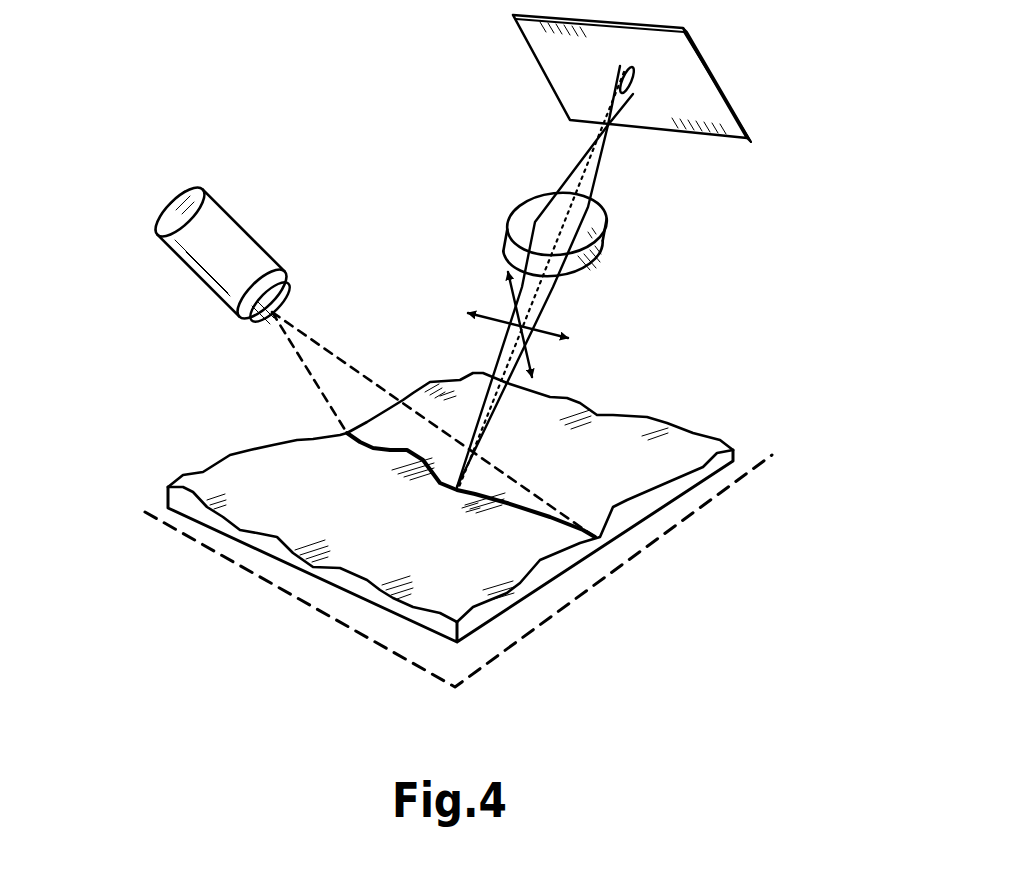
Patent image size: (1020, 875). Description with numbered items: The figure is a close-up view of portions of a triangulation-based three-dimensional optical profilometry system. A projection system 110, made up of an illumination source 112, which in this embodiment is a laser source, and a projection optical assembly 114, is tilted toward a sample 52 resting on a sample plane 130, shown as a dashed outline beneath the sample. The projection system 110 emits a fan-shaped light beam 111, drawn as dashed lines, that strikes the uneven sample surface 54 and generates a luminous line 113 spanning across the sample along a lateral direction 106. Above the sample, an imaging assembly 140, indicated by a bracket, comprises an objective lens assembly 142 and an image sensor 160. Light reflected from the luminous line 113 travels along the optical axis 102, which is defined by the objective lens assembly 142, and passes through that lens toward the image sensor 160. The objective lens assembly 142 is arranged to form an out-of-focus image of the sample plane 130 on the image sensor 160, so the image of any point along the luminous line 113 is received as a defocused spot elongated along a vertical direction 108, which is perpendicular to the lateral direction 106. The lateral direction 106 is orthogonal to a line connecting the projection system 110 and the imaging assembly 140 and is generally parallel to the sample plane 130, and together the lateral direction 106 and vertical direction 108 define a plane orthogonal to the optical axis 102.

The image sensor 160 is at (570, 68).
The optical axis 102 is at (580, 182).
The objective lens assembly 142 is at (610, 252).
The imaging assembly 140 is at (738, 15).
The illumination source 112 is at (230, 243).
The projection optical assembly 114 is at (280, 282).
The projection system 110 is at (183, 302).
The fan-shaped light beam 111 is at (270, 358).
The vertical direction 108 is at (517, 300).
The lateral direction 106 is at (507, 320).
The sample surface 54 is at (668, 450).
The sample 52 is at (740, 455).
The sample plane 130 is at (707, 503).
The luminous line 113 is at (534, 519).